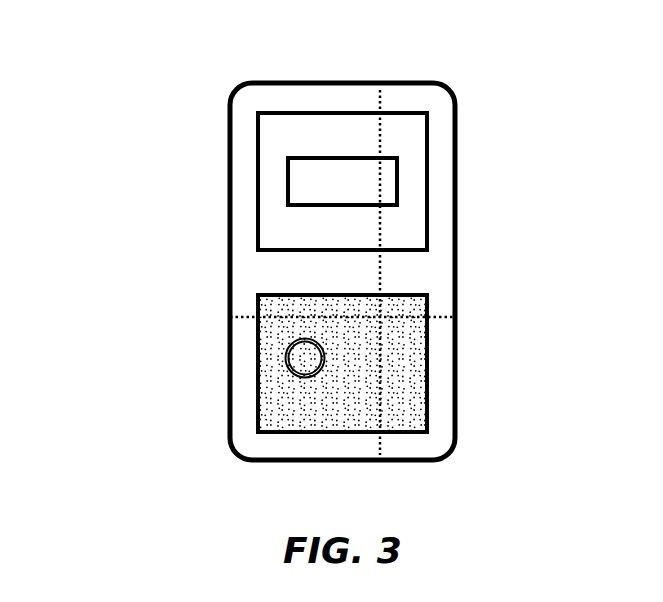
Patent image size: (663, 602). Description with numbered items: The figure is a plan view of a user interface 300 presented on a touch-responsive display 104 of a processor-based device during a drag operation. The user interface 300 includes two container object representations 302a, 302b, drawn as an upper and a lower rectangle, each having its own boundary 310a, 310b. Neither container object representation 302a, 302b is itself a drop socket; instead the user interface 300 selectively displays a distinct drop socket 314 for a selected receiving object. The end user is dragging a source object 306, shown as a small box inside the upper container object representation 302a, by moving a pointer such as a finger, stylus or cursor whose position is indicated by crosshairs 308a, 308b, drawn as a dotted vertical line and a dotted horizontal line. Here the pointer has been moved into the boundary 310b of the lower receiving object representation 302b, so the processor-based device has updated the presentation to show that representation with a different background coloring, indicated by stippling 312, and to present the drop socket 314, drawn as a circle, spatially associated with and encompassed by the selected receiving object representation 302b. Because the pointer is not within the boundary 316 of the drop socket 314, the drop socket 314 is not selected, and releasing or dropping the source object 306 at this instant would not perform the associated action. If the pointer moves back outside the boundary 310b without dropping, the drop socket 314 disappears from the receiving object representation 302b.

The user interface 300 is at (248, 100).
The touch-responsive display 104 is at (457, 116).
The boundary of first container object representation 310a is at (413, 113).
The source object 306 is at (398, 177).
The first container object representation 302a is at (385, 187).
The crosshair 308a is at (380, 98).
The crosshair 308b is at (247, 317).
The second container object representation 302b is at (452, 363).
The boundary of second container object representation 310b is at (427, 345).
The stippling 312 is at (402, 398).
The drop socket 314 is at (287, 353).
The boundary of drop socket 316 is at (291, 370).